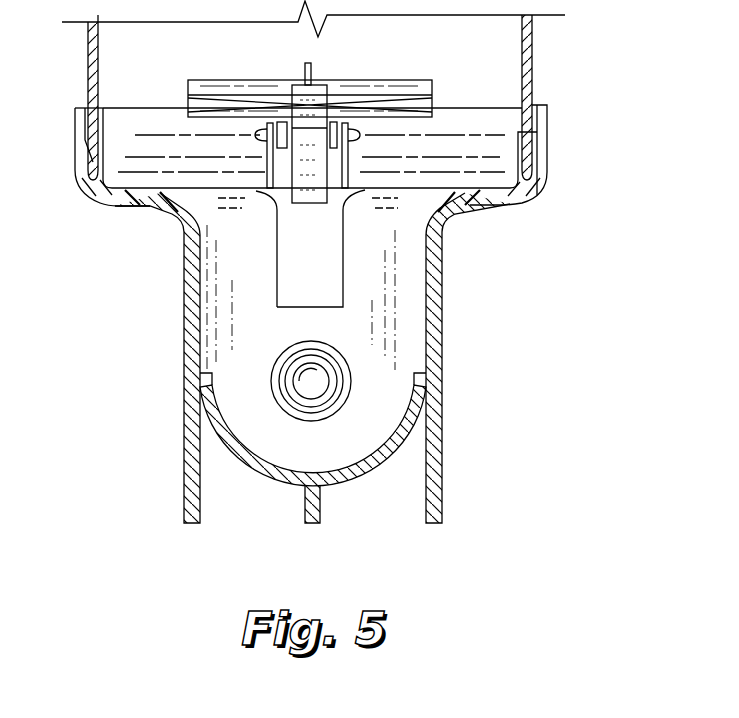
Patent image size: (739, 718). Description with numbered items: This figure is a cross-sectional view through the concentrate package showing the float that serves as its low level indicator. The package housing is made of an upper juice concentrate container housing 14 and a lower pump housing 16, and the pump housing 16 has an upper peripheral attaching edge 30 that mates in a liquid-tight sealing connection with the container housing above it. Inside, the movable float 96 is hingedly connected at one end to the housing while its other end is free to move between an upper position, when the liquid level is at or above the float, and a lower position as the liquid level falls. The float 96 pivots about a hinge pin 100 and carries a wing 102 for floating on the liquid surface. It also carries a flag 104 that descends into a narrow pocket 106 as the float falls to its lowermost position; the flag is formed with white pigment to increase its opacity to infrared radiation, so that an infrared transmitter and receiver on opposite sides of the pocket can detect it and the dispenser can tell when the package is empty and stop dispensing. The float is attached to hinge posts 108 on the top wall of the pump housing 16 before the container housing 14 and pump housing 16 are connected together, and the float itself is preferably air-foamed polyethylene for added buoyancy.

The upper juice concentrate container housing 14 is at (530, 73).
The upper peripheral attaching edge 30 is at (73, 142).
The float 96 is at (370, 66).
The hinge pin 100 is at (353, 130).
The wing 102 is at (206, 78).
The flag 104 is at (317, 206).
The narrow pocket 106 is at (290, 302).
The hinge posts 108 is at (268, 165).
The lower pump housing 16 is at (473, 373).